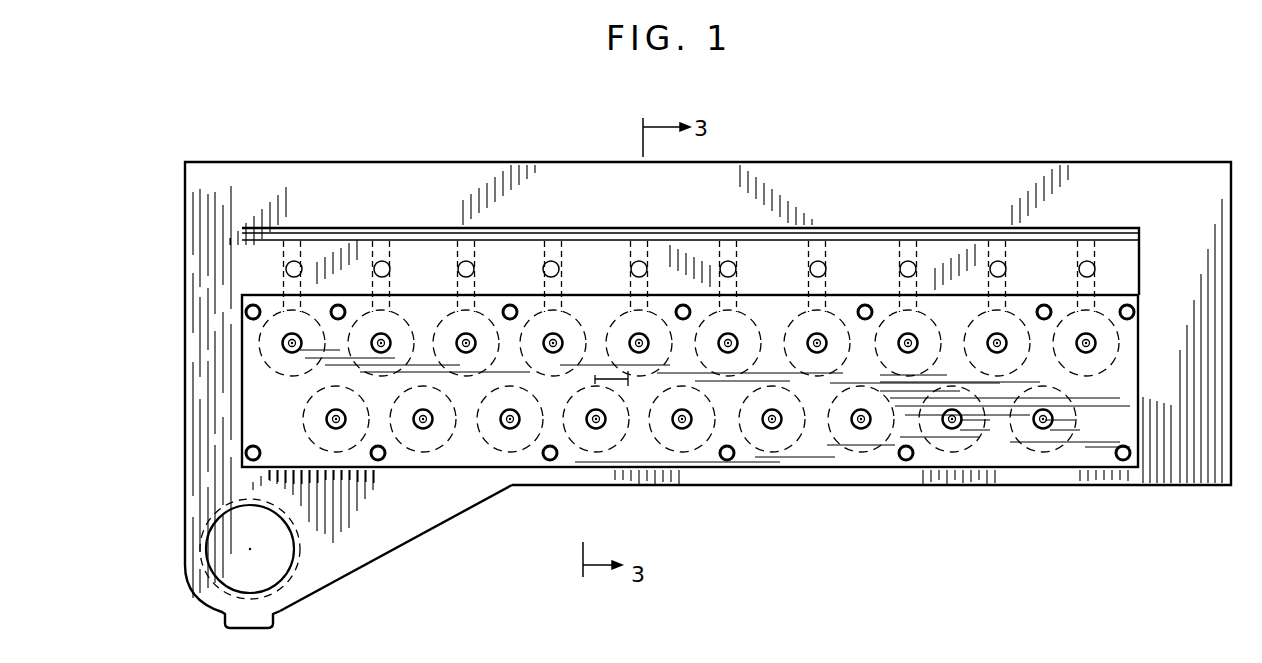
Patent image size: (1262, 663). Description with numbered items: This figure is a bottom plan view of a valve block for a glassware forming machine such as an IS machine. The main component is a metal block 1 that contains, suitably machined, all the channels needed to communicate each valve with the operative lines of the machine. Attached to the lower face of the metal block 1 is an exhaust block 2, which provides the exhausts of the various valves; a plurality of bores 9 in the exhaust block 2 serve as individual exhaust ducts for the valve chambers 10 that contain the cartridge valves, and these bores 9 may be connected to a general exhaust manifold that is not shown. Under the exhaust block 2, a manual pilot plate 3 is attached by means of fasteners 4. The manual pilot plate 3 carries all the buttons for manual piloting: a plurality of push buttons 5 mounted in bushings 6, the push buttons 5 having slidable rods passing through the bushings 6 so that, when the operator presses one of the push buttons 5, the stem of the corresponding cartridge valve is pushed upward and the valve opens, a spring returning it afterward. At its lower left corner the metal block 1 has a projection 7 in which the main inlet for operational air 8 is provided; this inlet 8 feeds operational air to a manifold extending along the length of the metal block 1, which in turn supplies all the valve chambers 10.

The metal block 1 is at (994, 170).
The exhaust block 2 is at (1128, 280).
The manual pilot plate 3 is at (1126, 390).
The fasteners 4 is at (1133, 456).
The push buttons 5 is at (762, 424).
The bushings 6 is at (776, 417).
The projection 7 is at (343, 563).
The main inlet for operational air 8 is at (222, 573).
The bores 9 is at (380, 245).
The valve chambers 10 is at (846, 450).